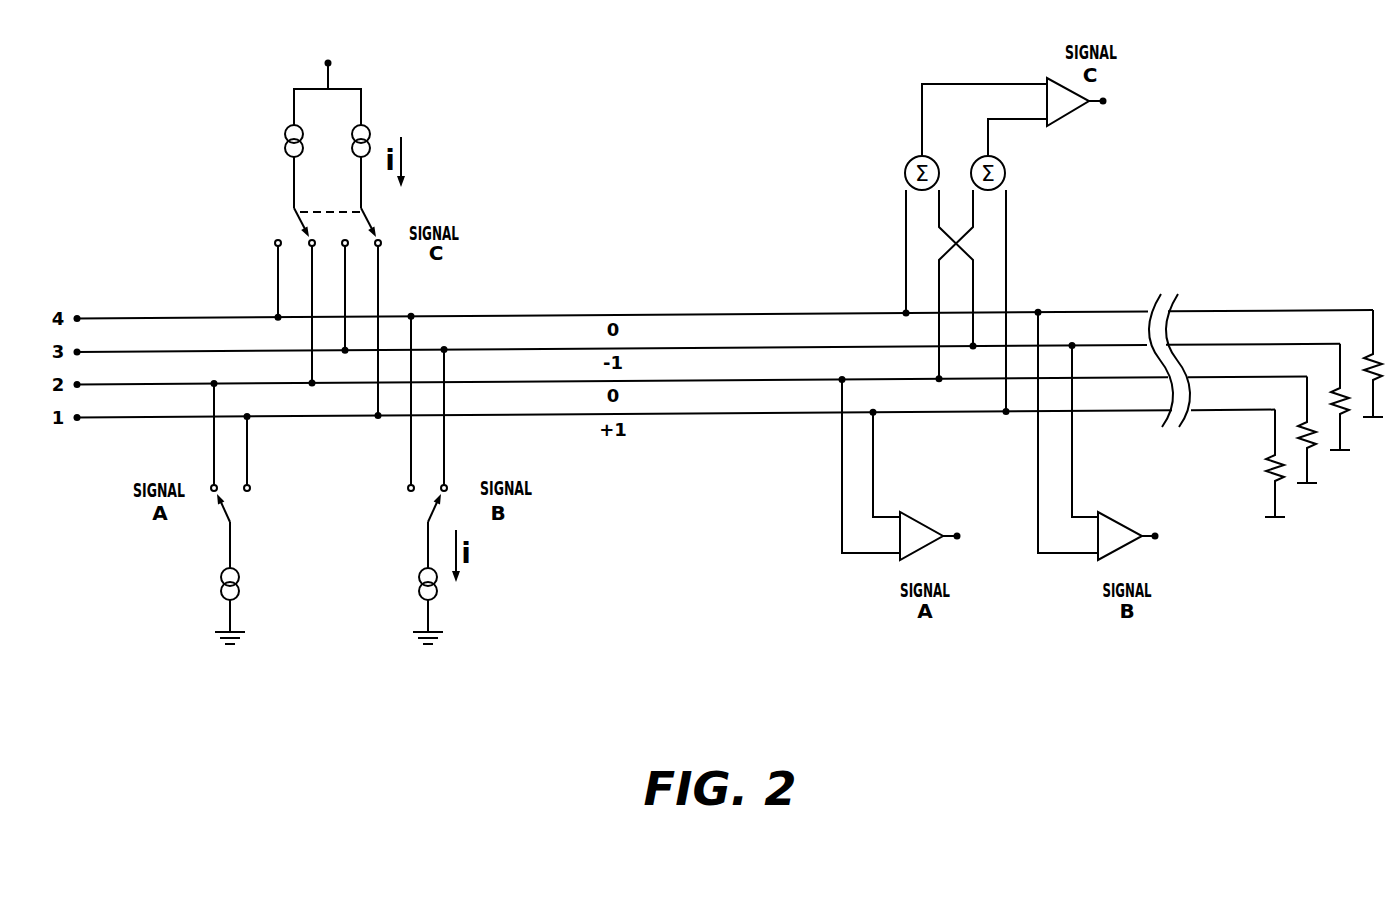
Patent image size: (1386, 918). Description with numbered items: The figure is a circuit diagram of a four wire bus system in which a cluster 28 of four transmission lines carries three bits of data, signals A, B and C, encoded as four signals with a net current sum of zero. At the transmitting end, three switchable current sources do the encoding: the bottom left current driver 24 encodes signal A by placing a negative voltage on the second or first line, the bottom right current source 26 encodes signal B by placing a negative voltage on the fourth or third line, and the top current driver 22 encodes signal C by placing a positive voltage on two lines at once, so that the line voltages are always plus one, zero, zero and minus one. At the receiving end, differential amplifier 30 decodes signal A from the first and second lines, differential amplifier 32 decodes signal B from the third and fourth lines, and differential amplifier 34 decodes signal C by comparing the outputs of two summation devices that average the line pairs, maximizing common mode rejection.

The top current driver 22 is at (266, 173).
The bottom left current driver 24 is at (250, 553).
The bottom right current source 26 is at (411, 551).
The cluster of four transmission lines 28 is at (700, 296).
The differential amplifier 30 is at (937, 511).
The differential amplifier 32 is at (1137, 511).
The differential amplifier 34 is at (1079, 129).